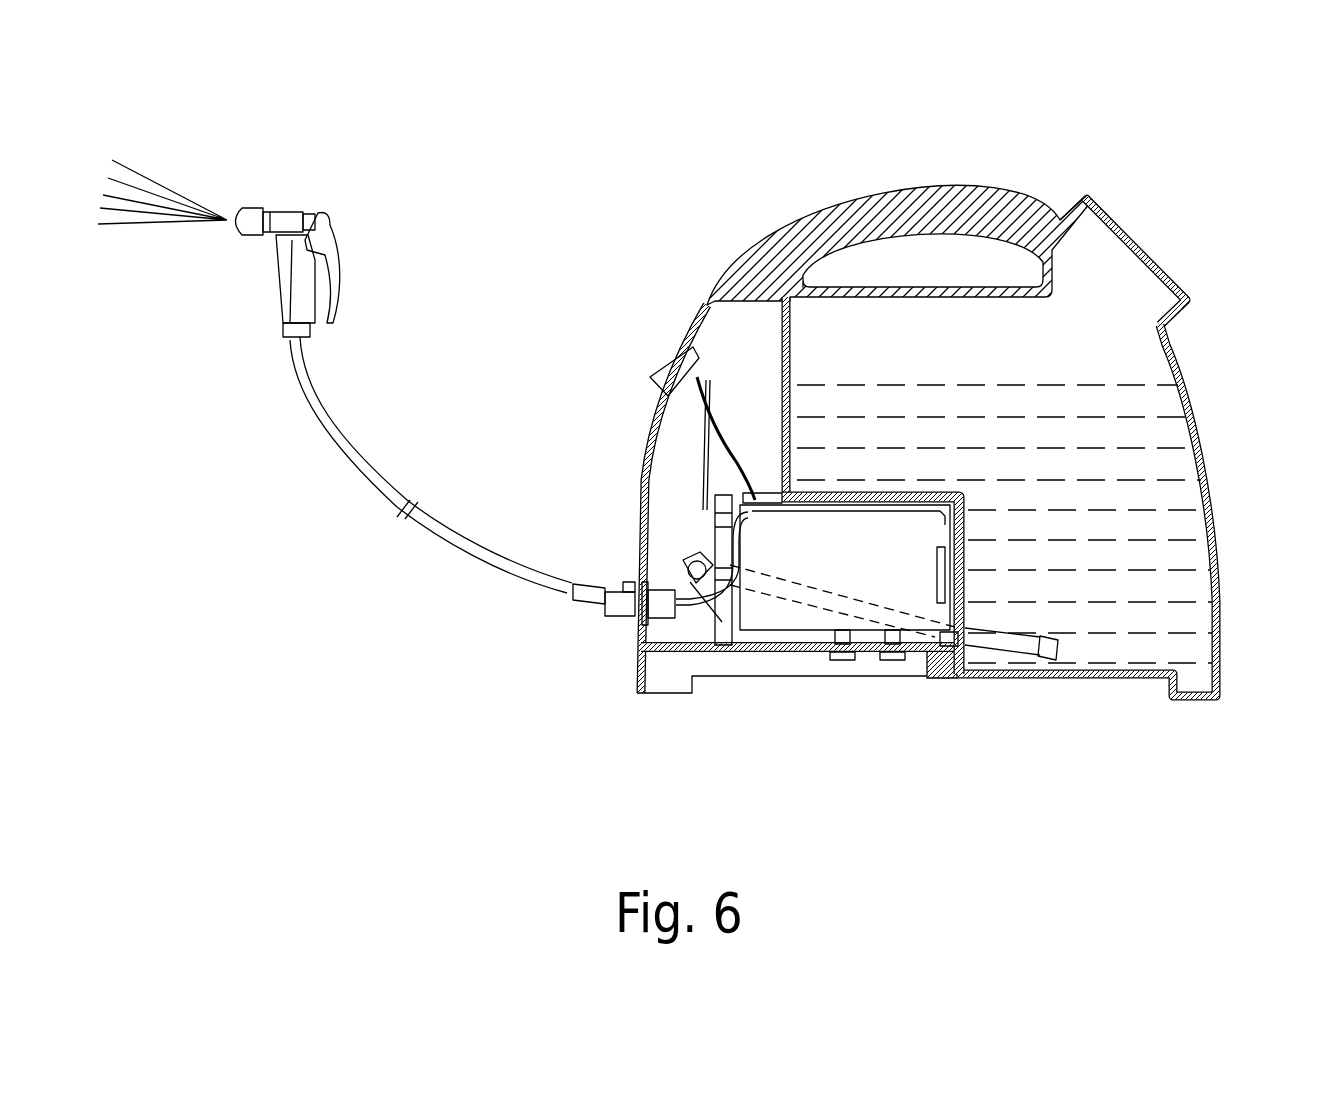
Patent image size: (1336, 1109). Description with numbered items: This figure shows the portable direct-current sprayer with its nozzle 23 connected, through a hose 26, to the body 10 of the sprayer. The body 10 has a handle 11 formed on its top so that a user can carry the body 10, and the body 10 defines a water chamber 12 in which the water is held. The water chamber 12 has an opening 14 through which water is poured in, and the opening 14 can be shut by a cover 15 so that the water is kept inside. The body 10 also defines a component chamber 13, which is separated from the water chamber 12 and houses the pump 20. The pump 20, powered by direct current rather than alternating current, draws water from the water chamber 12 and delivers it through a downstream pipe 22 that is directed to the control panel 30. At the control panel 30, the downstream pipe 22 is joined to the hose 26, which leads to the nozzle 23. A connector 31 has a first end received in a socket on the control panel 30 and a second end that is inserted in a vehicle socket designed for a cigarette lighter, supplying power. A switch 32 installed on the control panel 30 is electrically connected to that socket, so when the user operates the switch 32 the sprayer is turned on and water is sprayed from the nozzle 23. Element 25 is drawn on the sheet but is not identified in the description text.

The body 10 is at (1205, 440).
The handle 11 is at (923, 186).
The water chamber 12 is at (1163, 360).
The component chamber 13 is at (680, 425).
The opening 14 is at (1080, 228).
The cover 15 is at (1167, 277).
The pump 20 is at (770, 533).
The downstream pipe 22 is at (705, 585).
The nozzle 23 is at (290, 296).
The bottom plate 25 is at (785, 655).
The hose 26 is at (300, 385).
The control panel 30 is at (690, 307).
The connector 31 is at (587, 607).
The switch 32 is at (655, 377).